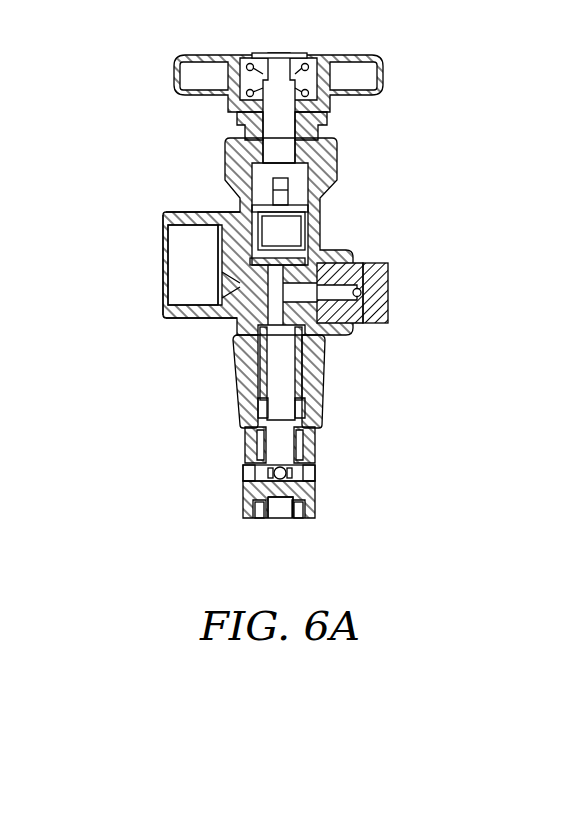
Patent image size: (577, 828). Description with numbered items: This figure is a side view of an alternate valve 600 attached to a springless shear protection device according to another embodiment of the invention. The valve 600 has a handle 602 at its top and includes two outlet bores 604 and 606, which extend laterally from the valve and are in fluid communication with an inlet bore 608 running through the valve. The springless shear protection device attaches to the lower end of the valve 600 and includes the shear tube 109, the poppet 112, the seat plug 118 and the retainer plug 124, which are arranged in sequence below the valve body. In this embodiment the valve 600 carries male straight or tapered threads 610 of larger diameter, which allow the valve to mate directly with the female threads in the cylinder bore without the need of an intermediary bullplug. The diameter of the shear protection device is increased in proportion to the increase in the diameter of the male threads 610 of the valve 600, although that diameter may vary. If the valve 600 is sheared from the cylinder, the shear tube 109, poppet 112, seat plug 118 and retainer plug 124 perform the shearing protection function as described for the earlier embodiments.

The valve 600 is at (126, 64).
The handle 602 is at (386, 82).
The outlet bore 604 is at (163, 272).
The outlet bore 606 is at (392, 278).
The inlet bore 608 is at (283, 298).
The male straight threads 610 is at (236, 393).
The shear tube 109 is at (297, 386).
The poppet 112 is at (316, 453).
The seat plug 118 is at (316, 478).
The retainer plug 124 is at (272, 518).